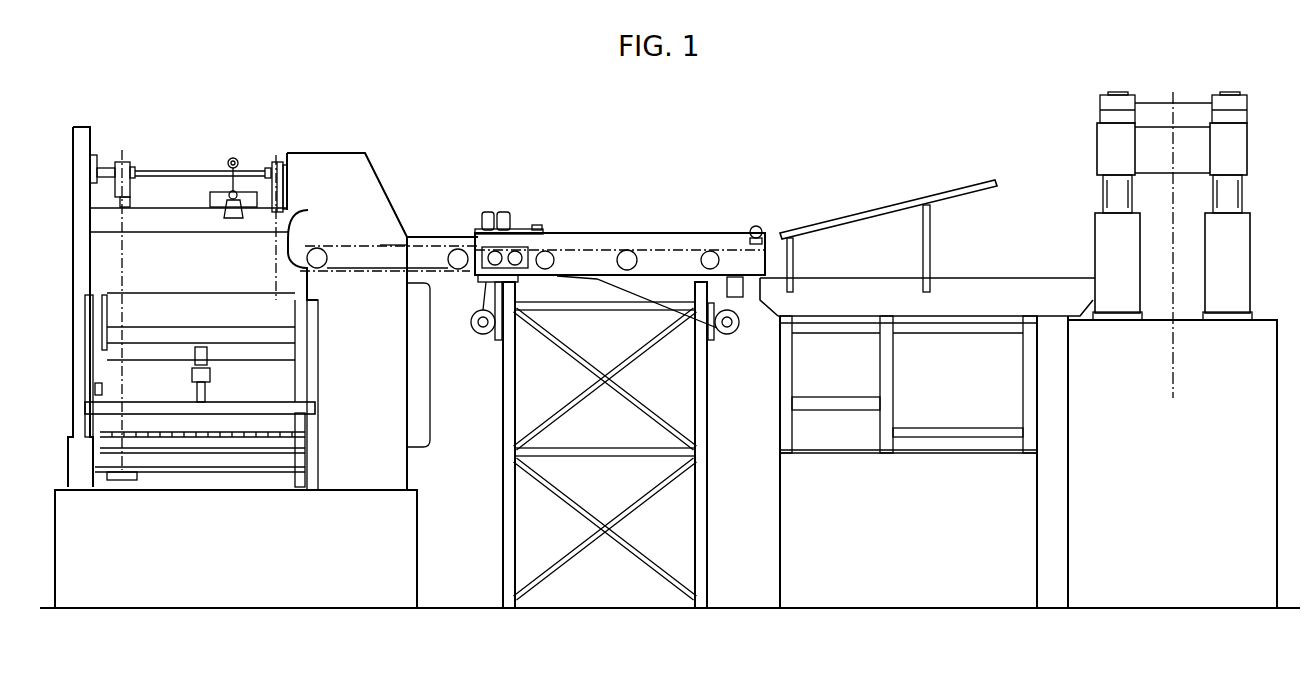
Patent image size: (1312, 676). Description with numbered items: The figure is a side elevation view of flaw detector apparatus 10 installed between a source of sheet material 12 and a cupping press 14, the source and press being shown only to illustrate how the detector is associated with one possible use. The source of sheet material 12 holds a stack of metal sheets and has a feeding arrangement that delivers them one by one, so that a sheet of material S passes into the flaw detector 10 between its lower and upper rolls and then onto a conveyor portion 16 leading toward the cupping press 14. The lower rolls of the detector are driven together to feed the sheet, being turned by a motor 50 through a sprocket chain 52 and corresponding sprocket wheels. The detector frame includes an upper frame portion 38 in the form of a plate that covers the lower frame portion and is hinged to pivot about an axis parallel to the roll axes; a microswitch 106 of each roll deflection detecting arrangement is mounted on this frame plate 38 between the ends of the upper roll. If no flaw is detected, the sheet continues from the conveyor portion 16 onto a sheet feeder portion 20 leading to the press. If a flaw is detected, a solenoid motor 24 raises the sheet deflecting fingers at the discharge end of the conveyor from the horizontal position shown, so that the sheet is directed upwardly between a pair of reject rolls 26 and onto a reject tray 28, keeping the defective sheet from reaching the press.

The flaw detector apparatus 10 is at (530, 191).
The source of sheet material 12 is at (285, 96).
The cupping press 14 is at (1153, 72).
The conveyor portion 16 is at (612, 233).
The sheet feeder portion 20 is at (878, 277).
The solenoid motor 24 is at (738, 320).
The reject rolls 26 is at (763, 229).
The reject tray 28 is at (868, 215).
The upper frame portion 38 is at (528, 231).
The motor 50 is at (486, 336).
The sprocket chain 52 is at (478, 288).
The microswitch 106 is at (504, 213).
The sheet of material S is at (422, 245).